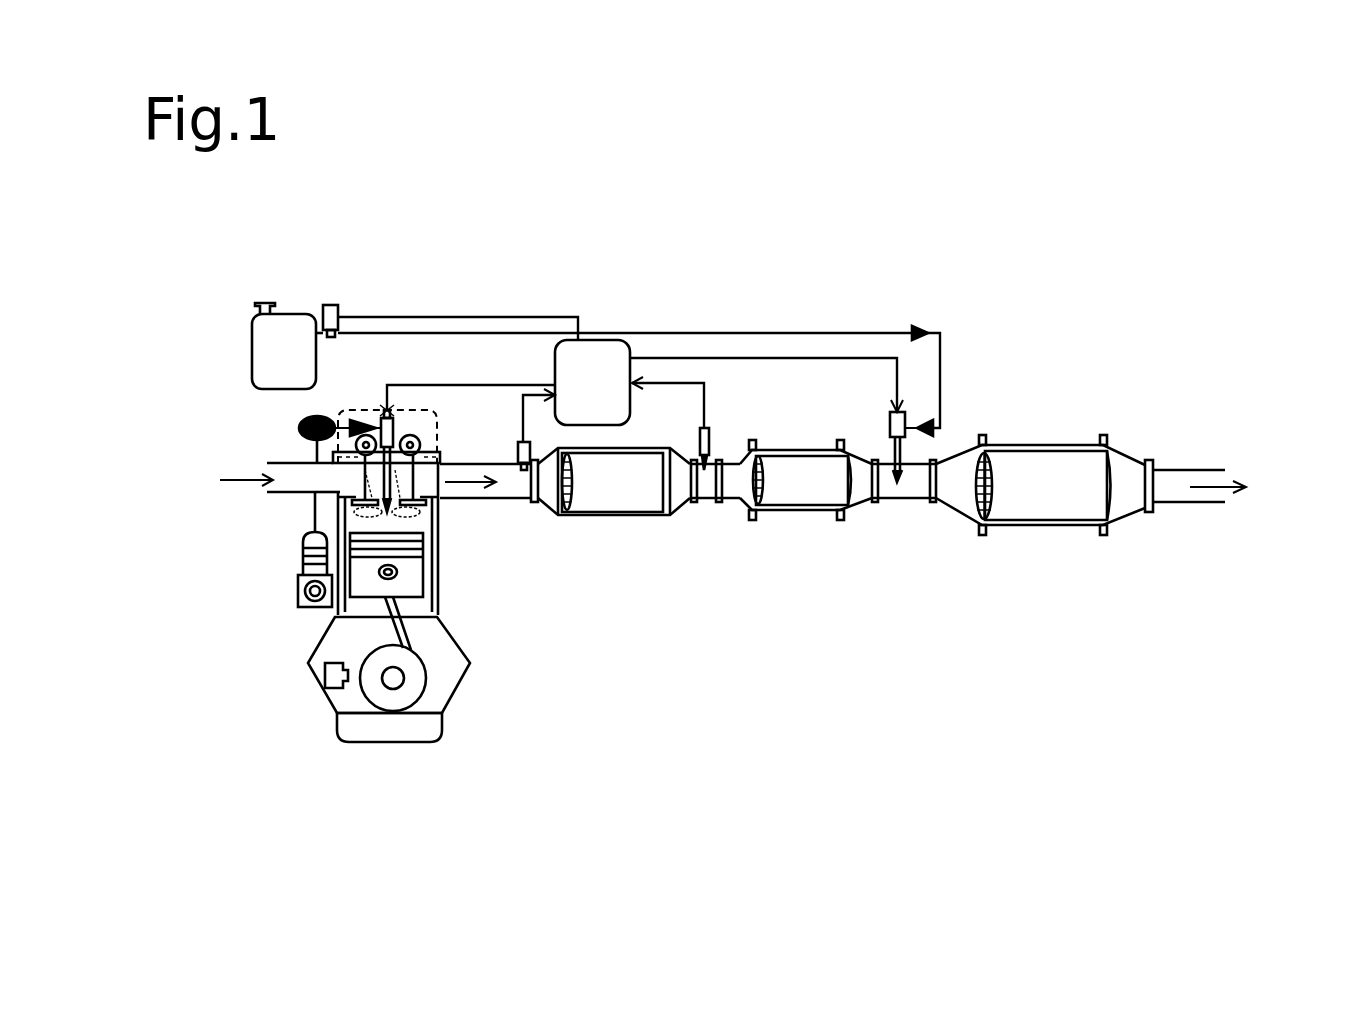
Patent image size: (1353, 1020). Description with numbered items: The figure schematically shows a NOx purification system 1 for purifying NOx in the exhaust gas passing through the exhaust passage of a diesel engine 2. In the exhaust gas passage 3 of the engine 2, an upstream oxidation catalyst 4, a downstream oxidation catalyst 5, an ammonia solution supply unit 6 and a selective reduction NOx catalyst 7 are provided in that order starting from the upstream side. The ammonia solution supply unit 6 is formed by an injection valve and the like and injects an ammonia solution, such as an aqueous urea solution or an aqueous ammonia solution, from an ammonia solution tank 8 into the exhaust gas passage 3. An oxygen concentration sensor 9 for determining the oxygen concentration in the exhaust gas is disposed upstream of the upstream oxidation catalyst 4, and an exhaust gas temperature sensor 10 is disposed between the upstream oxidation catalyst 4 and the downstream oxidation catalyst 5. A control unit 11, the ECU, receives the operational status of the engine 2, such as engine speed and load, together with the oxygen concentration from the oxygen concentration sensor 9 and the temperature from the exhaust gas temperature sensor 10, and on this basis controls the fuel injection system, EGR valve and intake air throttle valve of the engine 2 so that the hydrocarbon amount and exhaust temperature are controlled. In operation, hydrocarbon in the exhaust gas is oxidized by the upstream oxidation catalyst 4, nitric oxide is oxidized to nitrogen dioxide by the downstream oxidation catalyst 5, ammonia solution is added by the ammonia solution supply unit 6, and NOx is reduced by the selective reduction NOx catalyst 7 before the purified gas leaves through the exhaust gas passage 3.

The NOx purification system 1 is at (799, 283).
The diesel engine 2 is at (457, 687).
The exhaust gas passage 3 is at (483, 497).
The upstream oxidation catalyst 4 is at (603, 512).
The downstream oxidation catalyst 5 is at (788, 512).
The ammonia solution supply unit 6 is at (888, 442).
The selective reduction NOx catalyst 7 is at (1052, 525).
The ammonia solution tank 8 is at (272, 356).
The oxygen concentration sensor 9 is at (519, 447).
The exhaust gas temperature sensor 10 is at (712, 440).
The control unit 11 is at (598, 355).